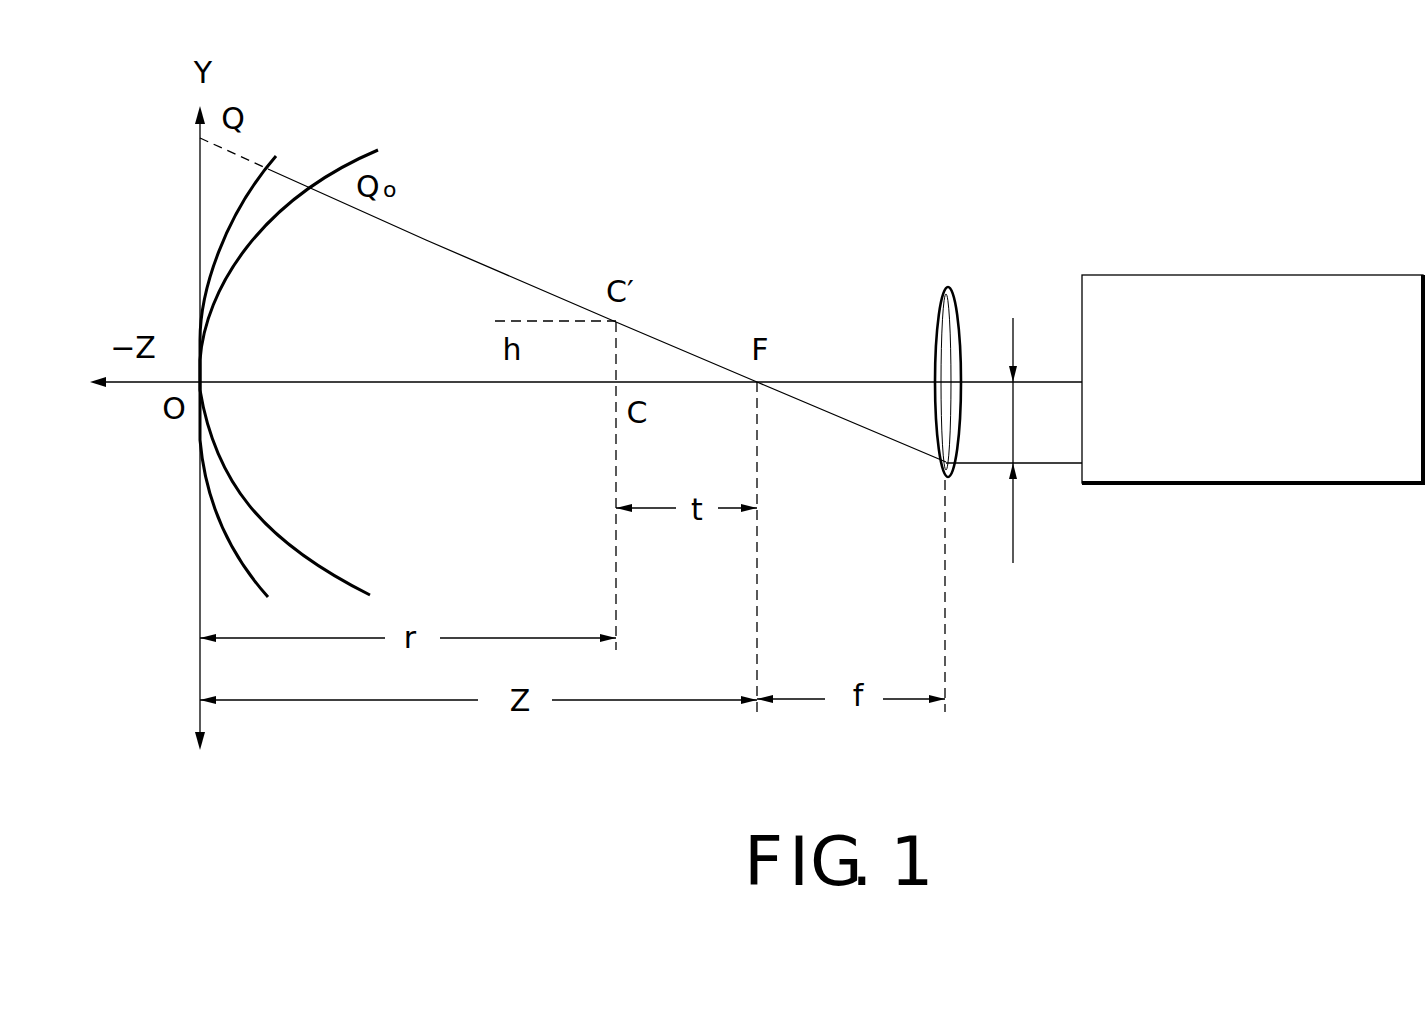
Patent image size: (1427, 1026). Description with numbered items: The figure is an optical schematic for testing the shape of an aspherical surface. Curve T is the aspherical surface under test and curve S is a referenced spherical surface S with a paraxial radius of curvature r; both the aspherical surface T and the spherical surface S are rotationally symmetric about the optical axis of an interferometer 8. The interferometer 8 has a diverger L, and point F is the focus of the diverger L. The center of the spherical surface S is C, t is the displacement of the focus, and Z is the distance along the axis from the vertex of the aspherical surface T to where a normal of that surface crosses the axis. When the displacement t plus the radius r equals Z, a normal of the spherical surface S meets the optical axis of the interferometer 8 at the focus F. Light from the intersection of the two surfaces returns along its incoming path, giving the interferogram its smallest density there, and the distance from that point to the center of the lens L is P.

The interferometer 8 is at (1211, 283).
The diverger L is at (950, 288).
The referenced spherical surface S is at (289, 372).
The aspherical surface T is at (244, 380).
The distance from intersection point to center of lens P is at (1014, 440).